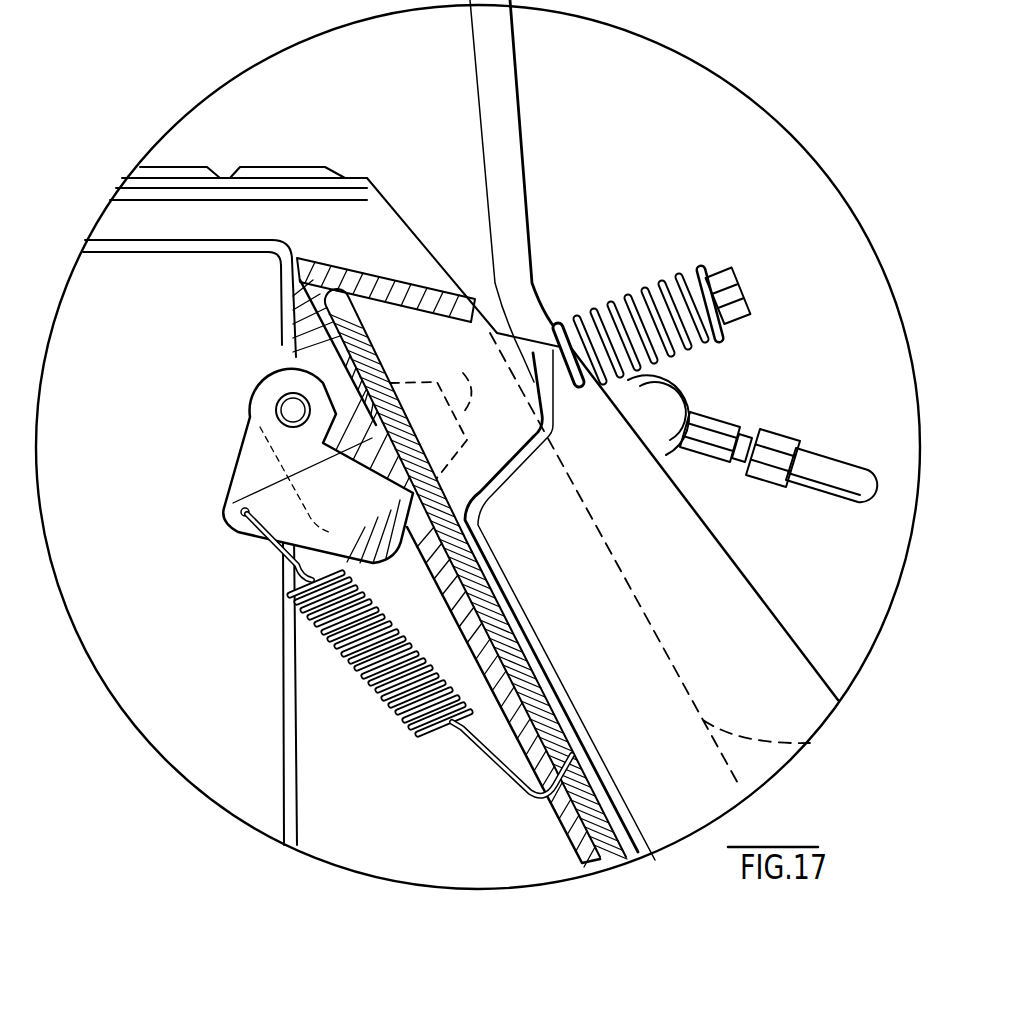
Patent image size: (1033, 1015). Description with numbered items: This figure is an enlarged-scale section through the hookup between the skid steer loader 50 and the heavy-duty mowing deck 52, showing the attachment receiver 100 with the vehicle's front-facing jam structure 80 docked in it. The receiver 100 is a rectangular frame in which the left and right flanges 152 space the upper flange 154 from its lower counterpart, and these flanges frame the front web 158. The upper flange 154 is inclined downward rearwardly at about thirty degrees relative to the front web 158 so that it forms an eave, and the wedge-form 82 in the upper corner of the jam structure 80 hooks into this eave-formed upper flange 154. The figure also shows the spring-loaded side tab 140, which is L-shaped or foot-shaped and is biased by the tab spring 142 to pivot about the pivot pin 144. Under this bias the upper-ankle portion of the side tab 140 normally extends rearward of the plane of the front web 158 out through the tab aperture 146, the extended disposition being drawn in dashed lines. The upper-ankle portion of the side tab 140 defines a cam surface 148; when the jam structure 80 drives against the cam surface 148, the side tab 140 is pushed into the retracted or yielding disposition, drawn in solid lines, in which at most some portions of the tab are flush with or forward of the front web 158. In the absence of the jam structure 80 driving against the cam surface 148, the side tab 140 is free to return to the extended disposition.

The skid steer loader 50 is at (810, 661).
The heavy-duty mowing deck 52 is at (152, 240).
The jam structure 80 is at (517, 650).
The wedge-form 82 is at (530, 345).
The receiver 100 is at (378, 265).
The side tab 140 is at (270, 440).
The tab spring 142 is at (403, 717).
The pivot pin 144 is at (278, 413).
The tab aperture 146 is at (248, 511).
The cam surface 148 is at (360, 490).
The left and right flanges 152 is at (812, 744).
The upper flange 154 is at (420, 335).
The front web 158 is at (548, 680).